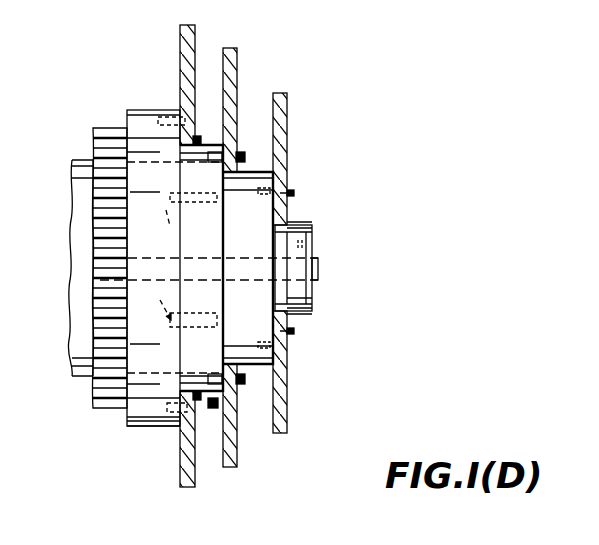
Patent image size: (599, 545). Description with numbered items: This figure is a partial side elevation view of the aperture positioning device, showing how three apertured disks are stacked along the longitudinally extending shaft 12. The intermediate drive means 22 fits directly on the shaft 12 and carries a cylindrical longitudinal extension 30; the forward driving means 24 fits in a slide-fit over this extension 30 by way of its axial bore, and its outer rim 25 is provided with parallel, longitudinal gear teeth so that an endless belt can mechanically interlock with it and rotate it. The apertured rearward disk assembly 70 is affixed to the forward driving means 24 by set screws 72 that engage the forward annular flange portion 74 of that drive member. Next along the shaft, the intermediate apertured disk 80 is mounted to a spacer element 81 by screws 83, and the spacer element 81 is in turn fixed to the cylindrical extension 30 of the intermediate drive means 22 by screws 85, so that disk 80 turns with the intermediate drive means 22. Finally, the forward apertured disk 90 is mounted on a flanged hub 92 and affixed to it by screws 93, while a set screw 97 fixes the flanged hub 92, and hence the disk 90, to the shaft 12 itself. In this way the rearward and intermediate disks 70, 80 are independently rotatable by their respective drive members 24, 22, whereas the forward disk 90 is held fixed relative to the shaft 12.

The longitudinally extending shaft 12 is at (318, 270).
The intermediate drive means 22 is at (88, 450).
The forward driving means 24 is at (148, 433).
The outer rim 25 is at (110, 128).
The cylindrical longitudinal extension 30 is at (72, 378).
The rearward disk assembly 70 is at (180, 33).
The set screws 72 is at (197, 138).
The forward annular flange portion 74 is at (154, 115).
The intermediate apertured disk 80 is at (237, 53).
The spacer element 81 is at (213, 408).
The screws 83 is at (245, 153).
The screws 85 is at (154, 265).
The forward apertured disk 90 is at (288, 107).
The flanged hub 92 is at (294, 333).
The screws 93 is at (292, 192).
The set screw 97 is at (297, 222).